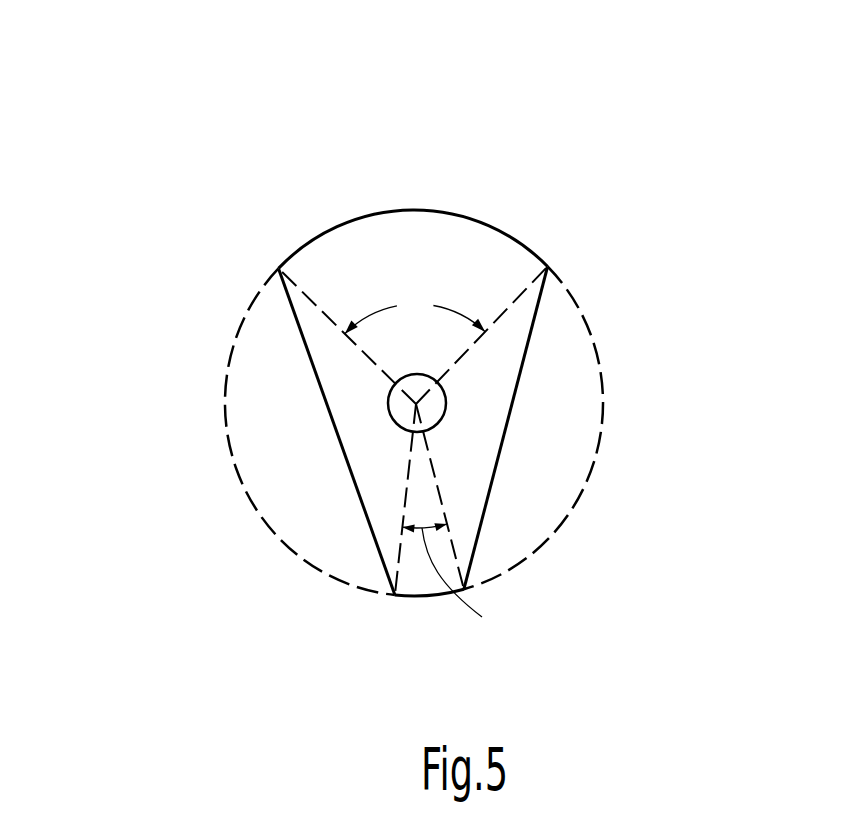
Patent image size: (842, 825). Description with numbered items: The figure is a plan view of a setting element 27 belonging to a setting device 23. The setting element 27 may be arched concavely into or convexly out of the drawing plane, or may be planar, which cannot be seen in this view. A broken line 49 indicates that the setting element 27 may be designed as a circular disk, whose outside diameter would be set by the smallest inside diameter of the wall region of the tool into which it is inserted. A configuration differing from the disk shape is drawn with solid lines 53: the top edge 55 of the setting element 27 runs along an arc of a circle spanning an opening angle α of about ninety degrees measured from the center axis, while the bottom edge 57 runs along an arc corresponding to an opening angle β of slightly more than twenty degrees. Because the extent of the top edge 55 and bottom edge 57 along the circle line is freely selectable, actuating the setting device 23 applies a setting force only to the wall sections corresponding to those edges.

The setting device 23 is at (193, 342).
The setting element 27 is at (317, 273).
The broken line 49 is at (587, 495).
The solid lines 53 is at (518, 384).
The top edge 55 is at (421, 210).
The bottom edge 57 is at (415, 598).